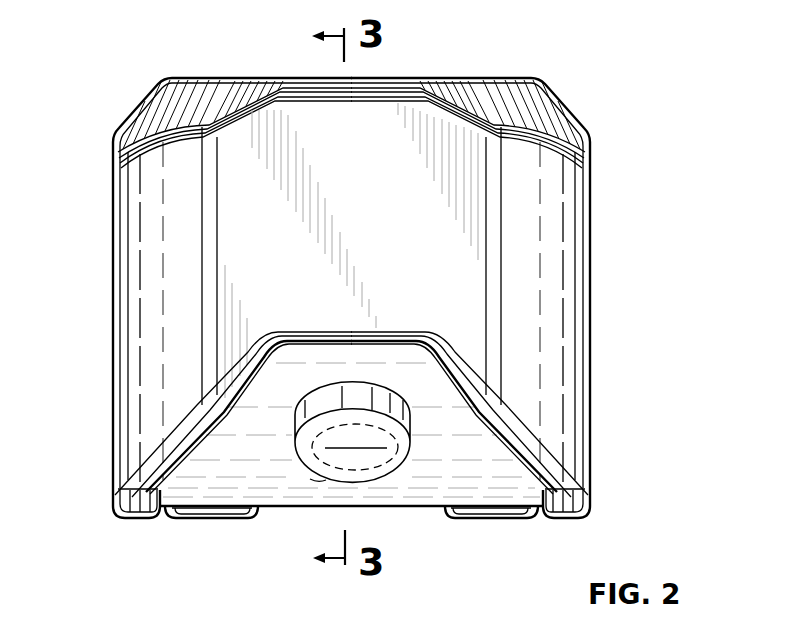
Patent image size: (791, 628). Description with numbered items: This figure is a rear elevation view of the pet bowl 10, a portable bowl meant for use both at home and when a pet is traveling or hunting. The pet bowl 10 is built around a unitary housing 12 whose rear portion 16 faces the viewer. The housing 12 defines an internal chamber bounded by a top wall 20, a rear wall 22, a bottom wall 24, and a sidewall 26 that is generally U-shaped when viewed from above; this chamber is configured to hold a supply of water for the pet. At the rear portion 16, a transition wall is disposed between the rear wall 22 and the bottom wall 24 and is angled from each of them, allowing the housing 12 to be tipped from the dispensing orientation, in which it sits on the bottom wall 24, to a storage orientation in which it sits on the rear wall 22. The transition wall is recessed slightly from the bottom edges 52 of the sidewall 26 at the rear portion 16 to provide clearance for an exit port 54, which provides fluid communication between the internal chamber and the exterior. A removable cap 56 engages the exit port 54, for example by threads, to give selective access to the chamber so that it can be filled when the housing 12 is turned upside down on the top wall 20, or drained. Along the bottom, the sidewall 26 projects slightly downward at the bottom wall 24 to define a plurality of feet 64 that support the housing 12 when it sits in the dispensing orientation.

The pet bowl 10 is at (634, 85).
The housing 12 is at (556, 269).
The rear portion 16 is at (132, 267).
The top wall 20 is at (458, 76).
The rear wall 22 is at (385, 216).
The bottom wall 24 is at (397, 508).
The sidewall 26 is at (122, 362).
The bottom edges 52 is at (135, 468).
The exit port 54 is at (373, 430).
The removable cap 56 is at (318, 478).
The feet 64 is at (201, 521).